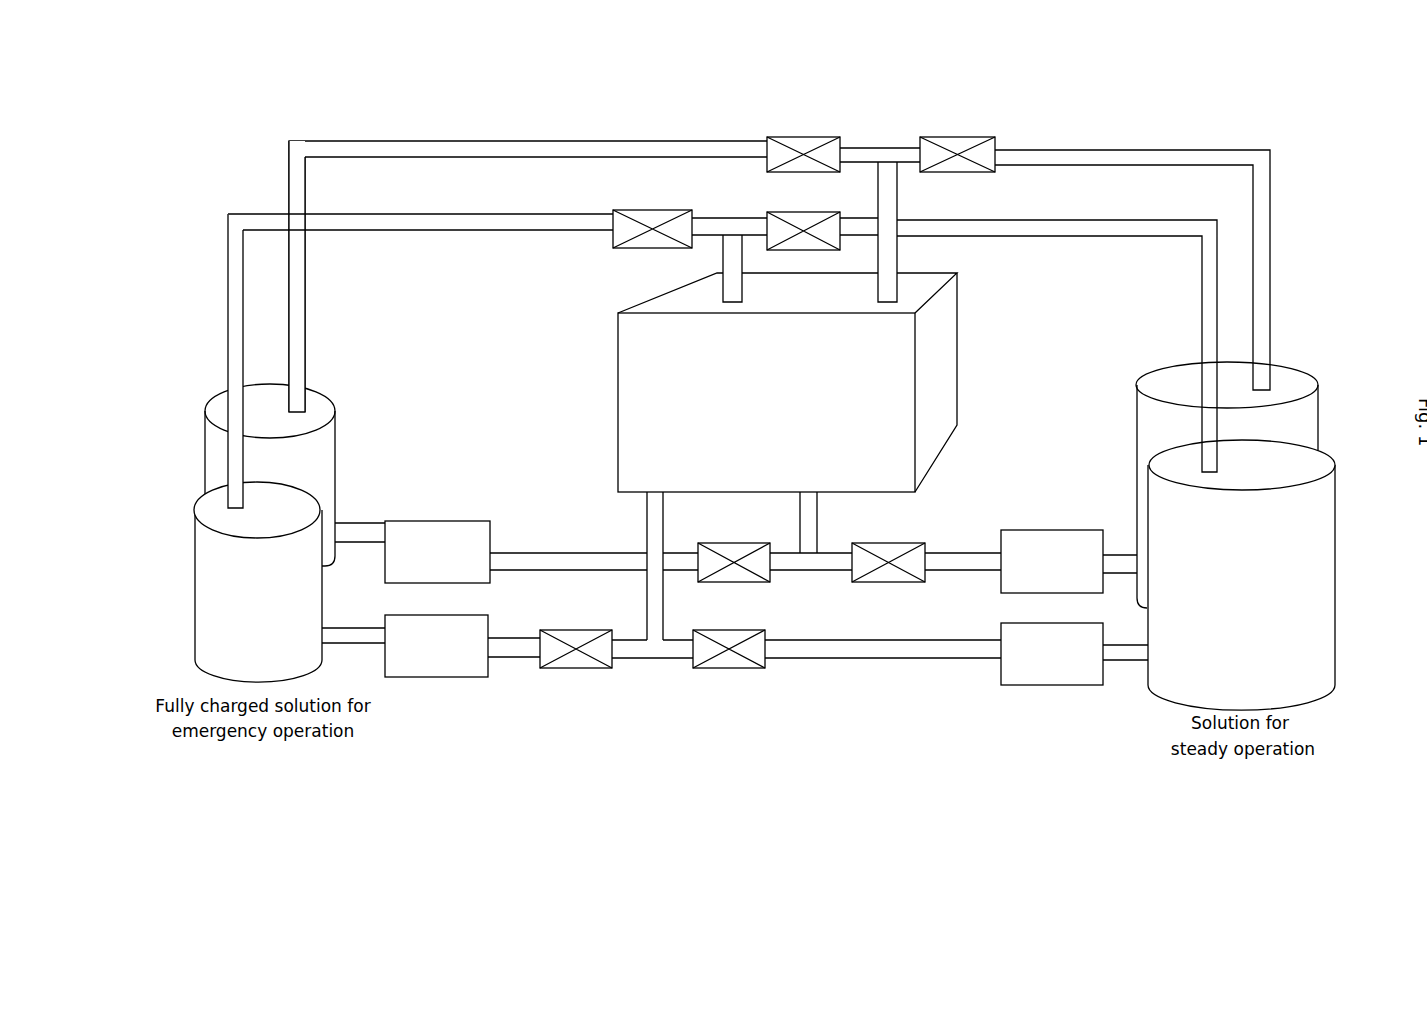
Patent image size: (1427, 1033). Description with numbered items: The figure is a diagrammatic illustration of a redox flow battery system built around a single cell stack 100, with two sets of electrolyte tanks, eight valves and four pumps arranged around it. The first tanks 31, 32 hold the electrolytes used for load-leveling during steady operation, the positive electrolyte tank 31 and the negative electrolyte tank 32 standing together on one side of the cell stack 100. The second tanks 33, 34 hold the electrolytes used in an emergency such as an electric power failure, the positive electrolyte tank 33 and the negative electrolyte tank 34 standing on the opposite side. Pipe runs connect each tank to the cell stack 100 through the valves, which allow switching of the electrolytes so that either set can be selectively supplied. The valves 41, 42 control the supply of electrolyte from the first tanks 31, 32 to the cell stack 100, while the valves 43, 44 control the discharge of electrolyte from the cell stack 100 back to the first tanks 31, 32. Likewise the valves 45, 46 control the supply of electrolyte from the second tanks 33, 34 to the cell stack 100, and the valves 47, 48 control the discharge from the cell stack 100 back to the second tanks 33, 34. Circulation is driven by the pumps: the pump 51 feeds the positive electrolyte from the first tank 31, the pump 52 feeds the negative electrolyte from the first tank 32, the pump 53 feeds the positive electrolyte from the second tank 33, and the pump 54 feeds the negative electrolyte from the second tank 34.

The first tank 31 is at (1165, 498).
The first tank 32 is at (1150, 413).
The second tank 33 is at (336, 521).
The second tank 34 is at (346, 428).
The valve 41 is at (730, 668).
The valve 42 is at (890, 582).
The valve 43 is at (808, 212).
The valve 44 is at (953, 137).
The valve 45 is at (578, 668).
The valve 46 is at (735, 582).
The valve 47 is at (653, 210).
The valve 48 is at (800, 137).
The pump 51 is at (1052, 685).
The pump 52 is at (1050, 530).
The pump 53 is at (437, 677).
The pump 54 is at (495, 521).
The cell stack 100 is at (617, 365).